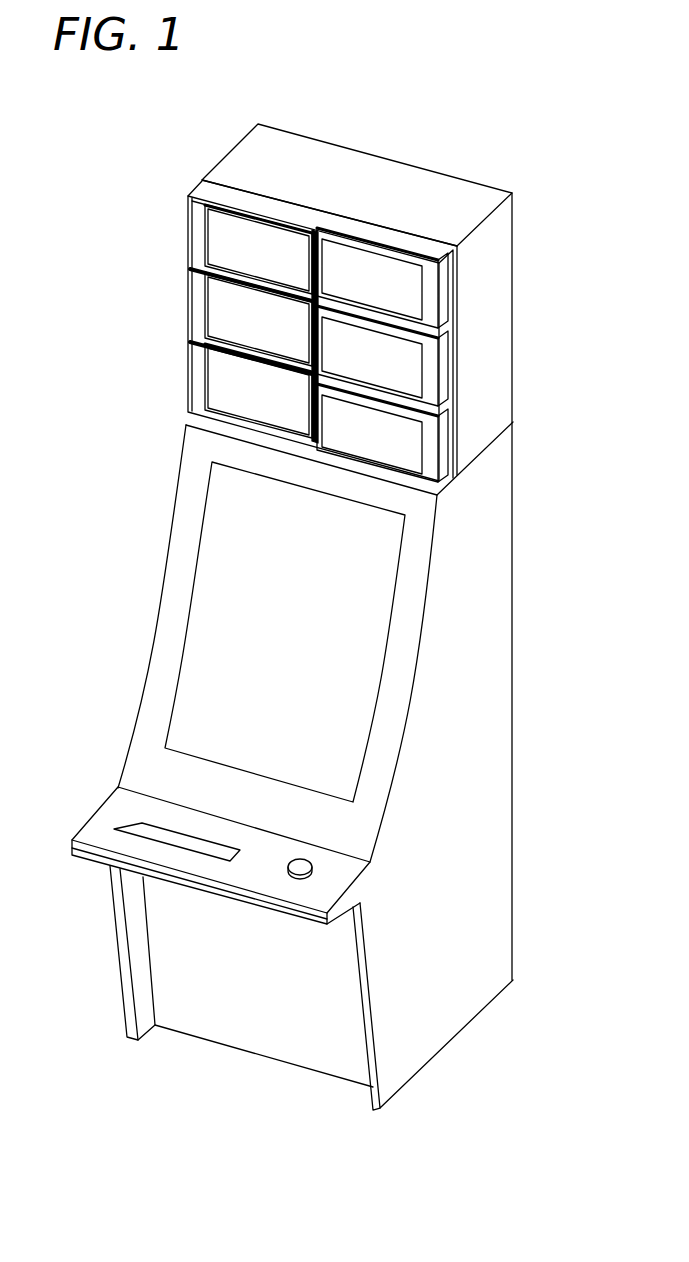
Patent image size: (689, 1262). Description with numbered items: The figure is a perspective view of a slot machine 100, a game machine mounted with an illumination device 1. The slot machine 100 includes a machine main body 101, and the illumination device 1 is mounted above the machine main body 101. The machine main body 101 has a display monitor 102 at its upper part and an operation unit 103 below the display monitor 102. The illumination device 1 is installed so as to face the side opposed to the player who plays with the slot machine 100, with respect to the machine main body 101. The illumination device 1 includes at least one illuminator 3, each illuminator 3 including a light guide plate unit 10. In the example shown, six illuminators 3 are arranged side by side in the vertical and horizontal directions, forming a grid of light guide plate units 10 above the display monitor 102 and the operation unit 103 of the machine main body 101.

The slot machine 100 is at (506, 137).
The illumination device 1 is at (513, 272).
The light guide plate unit 10 is at (267, 210).
The illuminator 3 is at (226, 322).
The machine main body 101 is at (513, 572).
The display monitor 102 is at (225, 628).
The operation unit 103 is at (108, 815).